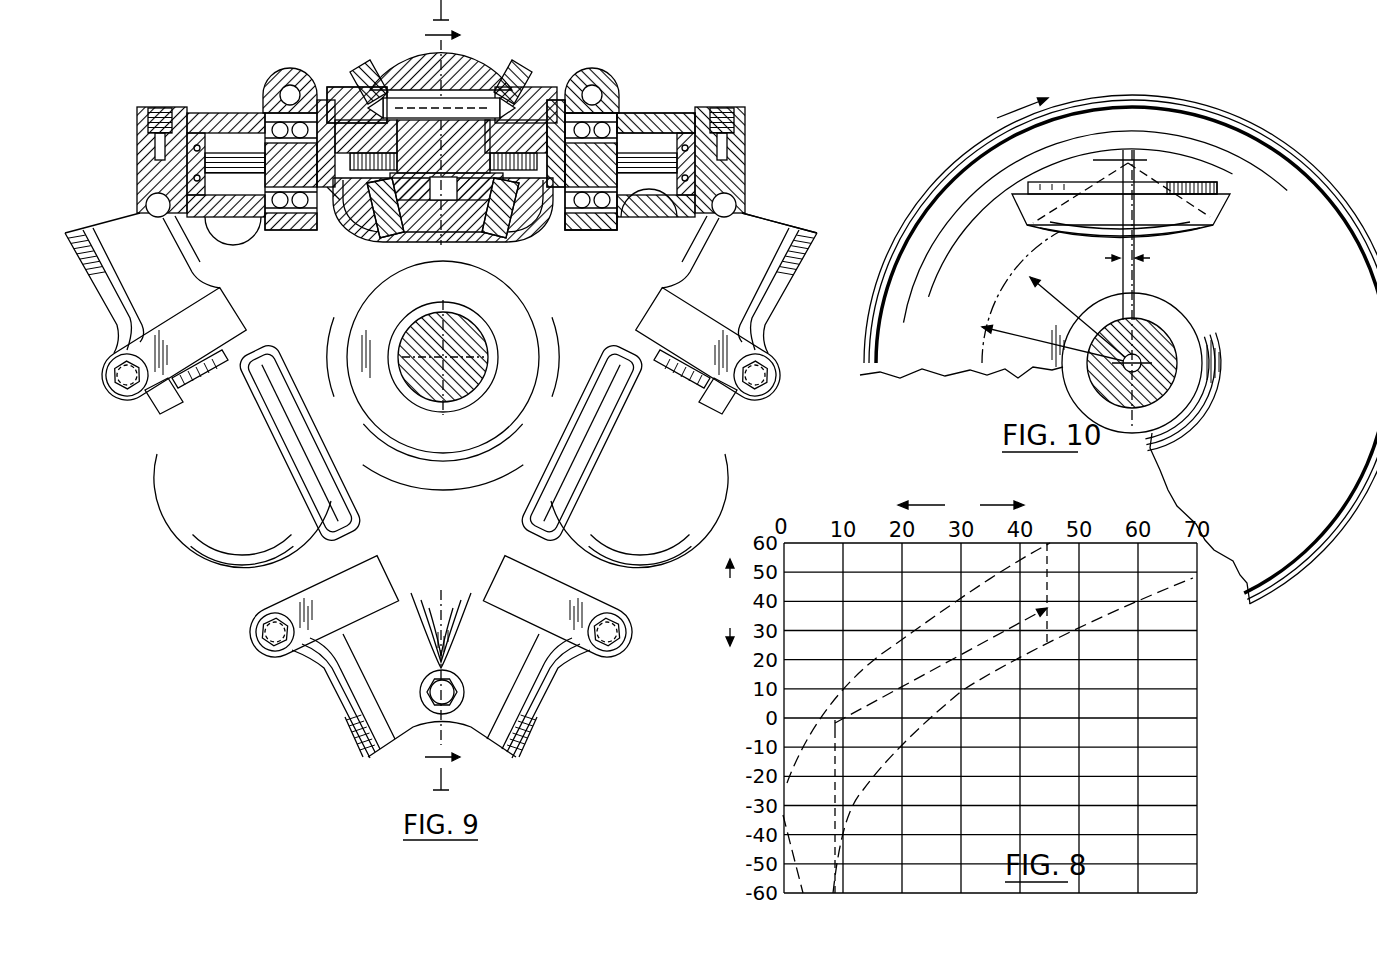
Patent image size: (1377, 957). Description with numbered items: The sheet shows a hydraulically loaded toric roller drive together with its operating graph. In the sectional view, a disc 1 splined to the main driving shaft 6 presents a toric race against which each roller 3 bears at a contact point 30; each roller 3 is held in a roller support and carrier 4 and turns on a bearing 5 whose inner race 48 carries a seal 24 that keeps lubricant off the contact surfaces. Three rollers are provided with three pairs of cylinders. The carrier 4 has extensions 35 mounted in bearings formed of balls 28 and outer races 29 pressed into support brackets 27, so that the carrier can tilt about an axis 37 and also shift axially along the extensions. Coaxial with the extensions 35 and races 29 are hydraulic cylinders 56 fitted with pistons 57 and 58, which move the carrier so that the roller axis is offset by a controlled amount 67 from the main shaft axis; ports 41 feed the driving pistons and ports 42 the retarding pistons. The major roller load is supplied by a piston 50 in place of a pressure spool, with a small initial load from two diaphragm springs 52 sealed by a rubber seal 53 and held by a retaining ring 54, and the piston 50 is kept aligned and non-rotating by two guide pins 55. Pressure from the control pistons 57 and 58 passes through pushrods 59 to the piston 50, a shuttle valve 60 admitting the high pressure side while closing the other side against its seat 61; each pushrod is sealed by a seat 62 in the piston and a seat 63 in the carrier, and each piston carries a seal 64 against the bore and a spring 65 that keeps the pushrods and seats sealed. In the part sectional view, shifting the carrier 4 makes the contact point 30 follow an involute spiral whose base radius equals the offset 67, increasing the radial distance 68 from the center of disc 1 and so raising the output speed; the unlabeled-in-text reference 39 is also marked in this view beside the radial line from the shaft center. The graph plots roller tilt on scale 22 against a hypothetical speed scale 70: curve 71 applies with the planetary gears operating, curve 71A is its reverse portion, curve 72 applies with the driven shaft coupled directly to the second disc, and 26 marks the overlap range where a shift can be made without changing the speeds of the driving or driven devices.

In FIG. 9, the disc 1 is at (522, 321).
In FIG. 10, the disc 1 is at (1223, 110).
In FIG. 9, the roller 3 is at (353, 217).
In FIG. 10, the roller 3 is at (1232, 205).
In FIG. 9, the roller support and carrier 4 is at (393, 62).
In FIG. 9, the bearing 5 is at (470, 226).
In FIG. 9, the main driving shaft 6 is at (417, 413).
In FIG. 10, the main driving shaft 6 is at (1162, 323).
In FIG. 8, the scale 22 is at (727, 602).
In FIG. 9, the seal 24 is at (500, 212).
In FIG. 8, the range of overlap 26 is at (941, 718).
In FIG. 9, the support bracket 27 is at (752, 190).
In FIG. 9, the ball 28 is at (617, 108).
In FIG. 9, the outer race 29 is at (268, 100).
In FIG. 10, the contact point 30 is at (1128, 225).
In FIG. 9, the extension 35 is at (280, 220).
In FIG. 9, the axis 37 is at (487, 110).
In FIG. 10, the axis 37 is at (1133, 160).
In FIG. 10, the radius arrow 39 is at (1038, 275).
In FIG. 9, the port 41 is at (534, 742).
In FIG. 9, the port 42 is at (800, 258).
In FIG. 9, the inner race 48 is at (441, 216).
In FIG. 9, the piston 50 is at (385, 205).
In FIG. 9, the diaphragm spring 52 is at (345, 298).
In FIG. 9, the rubber seal 53 is at (355, 222).
In FIG. 9, the retaining ring 54 is at (548, 180).
In FIG. 9, the guide pin 55 is at (446, 100).
In FIG. 9, the hydraulic cylinder 56 is at (667, 116).
In FIG. 9, the piston 57 is at (638, 233).
In FIG. 9, the piston 58 is at (257, 123).
In FIG. 9, the pushrod 59 is at (641, 122).
In FIG. 9, the shuttle valve 60 is at (405, 96).
In FIG. 9, the seat 61 is at (317, 220).
In FIG. 9, the seat 62 is at (660, 204).
In FIG. 9, the seat 63 is at (617, 192).
In FIG. 9, the seal 64 is at (247, 120).
In FIG. 9, the spring 65 is at (694, 148).
In FIG. 10, the offset 67 is at (1144, 263).
In FIG. 10, the radial distance 68 is at (1040, 346).
In FIG. 8, the scale 70 is at (961, 505).
In FIG. 8, the curve 71 is at (863, 680).
In FIG. 8, the curve 71A is at (797, 837).
In FIG. 8, the curve 72 is at (880, 767).